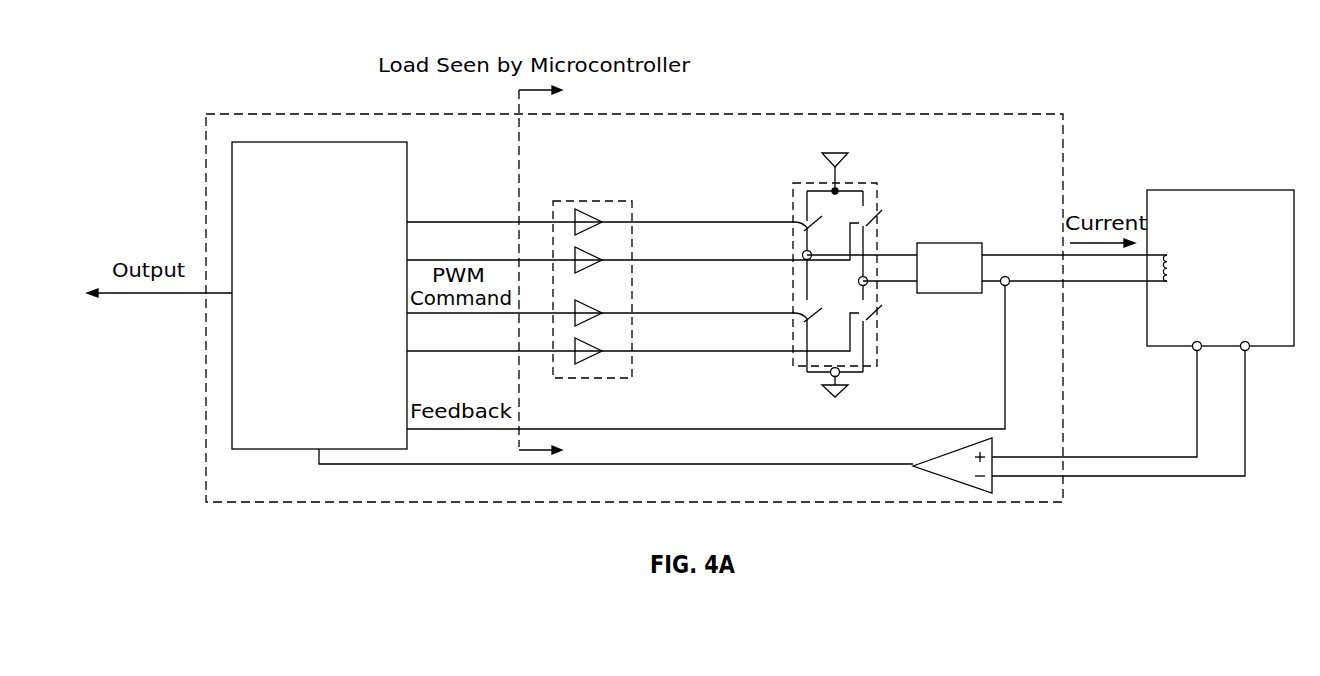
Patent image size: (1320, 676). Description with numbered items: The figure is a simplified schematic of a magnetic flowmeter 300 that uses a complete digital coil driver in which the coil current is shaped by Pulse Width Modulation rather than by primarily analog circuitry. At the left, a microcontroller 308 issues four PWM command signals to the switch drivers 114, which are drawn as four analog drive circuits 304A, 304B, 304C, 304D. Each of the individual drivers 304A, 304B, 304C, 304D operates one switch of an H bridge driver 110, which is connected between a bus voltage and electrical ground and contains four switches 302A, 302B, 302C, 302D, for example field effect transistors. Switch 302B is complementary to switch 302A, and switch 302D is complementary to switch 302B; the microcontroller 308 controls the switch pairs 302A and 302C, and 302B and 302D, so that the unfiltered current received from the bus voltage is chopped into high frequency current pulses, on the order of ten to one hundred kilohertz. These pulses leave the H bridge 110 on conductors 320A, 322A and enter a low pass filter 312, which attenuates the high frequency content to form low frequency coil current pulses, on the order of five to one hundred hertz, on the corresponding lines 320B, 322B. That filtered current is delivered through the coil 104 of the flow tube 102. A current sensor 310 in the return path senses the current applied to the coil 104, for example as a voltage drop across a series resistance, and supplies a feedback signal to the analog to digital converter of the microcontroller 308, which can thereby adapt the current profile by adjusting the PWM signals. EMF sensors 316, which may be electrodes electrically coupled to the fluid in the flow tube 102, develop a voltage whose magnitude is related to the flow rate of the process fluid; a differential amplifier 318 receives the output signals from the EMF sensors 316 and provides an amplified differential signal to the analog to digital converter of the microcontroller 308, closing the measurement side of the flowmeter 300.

The magnetic flowmeter 300 is at (1116, 67).
The microcontroller 308 is at (339, 205).
The switch drivers 114 is at (553, 204).
The analog drive circuit 304A is at (596, 231).
The analog drive circuit 304B is at (596, 269).
The analog drive circuit 304C is at (596, 322).
The analog drive circuit 304D is at (596, 360).
The H bridge driver 110 is at (836, 275).
The switch 302A is at (805, 227).
The switch 302B is at (805, 318).
The switch 302C is at (879, 215).
The switch 302D is at (876, 316).
The low pass filter 312 is at (965, 243).
The conductor 320A is at (886, 255).
The line 320B is at (1016, 255).
The conductor 322A is at (883, 284).
The line 322B is at (1047, 283).
The current sensor 310 is at (1010, 286).
The flow tube 102 is at (1221, 190).
The coil 104 is at (1168, 255).
The EMF sensors 316 is at (1194, 350).
The differential amplifier 318 is at (940, 480).